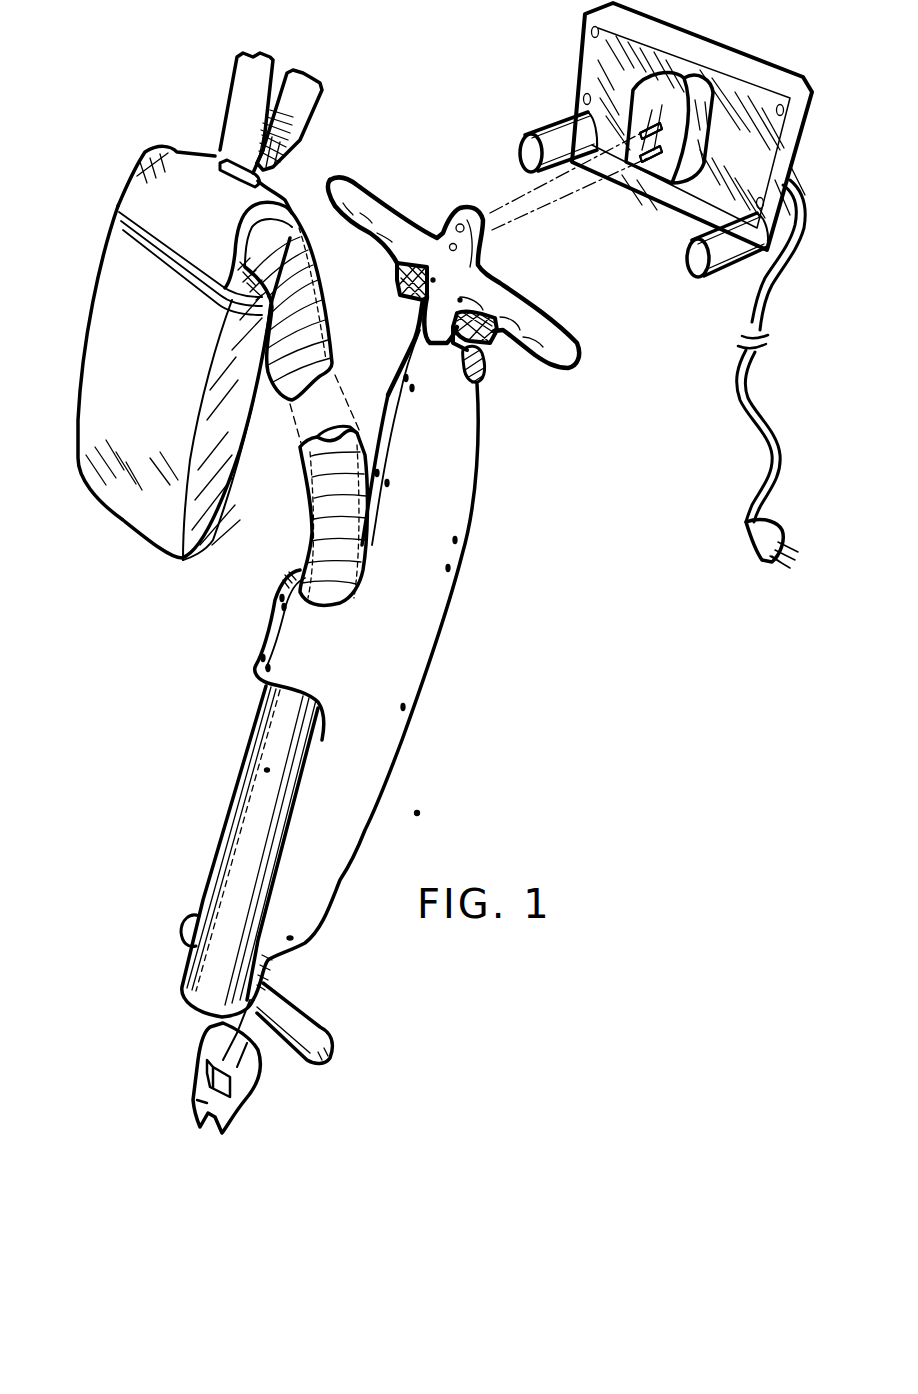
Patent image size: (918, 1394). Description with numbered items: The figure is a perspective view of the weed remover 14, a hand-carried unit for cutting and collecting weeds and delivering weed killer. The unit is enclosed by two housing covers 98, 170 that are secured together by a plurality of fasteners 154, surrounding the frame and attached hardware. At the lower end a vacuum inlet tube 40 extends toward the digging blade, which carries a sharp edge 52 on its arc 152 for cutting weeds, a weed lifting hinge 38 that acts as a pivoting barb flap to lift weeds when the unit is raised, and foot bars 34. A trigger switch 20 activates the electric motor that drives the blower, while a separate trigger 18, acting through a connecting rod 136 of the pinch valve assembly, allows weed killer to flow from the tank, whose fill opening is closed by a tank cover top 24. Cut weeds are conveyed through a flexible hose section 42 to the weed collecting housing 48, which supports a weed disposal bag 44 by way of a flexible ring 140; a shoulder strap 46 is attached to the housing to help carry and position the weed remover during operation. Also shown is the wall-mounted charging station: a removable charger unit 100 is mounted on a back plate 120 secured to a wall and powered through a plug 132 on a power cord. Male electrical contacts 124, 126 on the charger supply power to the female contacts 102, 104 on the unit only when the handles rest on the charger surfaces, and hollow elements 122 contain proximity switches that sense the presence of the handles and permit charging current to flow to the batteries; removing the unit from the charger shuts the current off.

The weed remover 14 is at (172, 682).
The trigger 18 is at (505, 345).
The trigger switch 20 is at (410, 290).
The tank cover top 24 is at (487, 370).
The foot bars 34 is at (190, 928).
The weed lifting hinge 38 is at (210, 1065).
The vacuum inlet tube 40 is at (268, 770).
The flexible hose 42 is at (318, 500).
The weed disposal bag 44 is at (108, 276).
The shoulder strap 46 is at (292, 107).
The weed collecting housing 48 is at (181, 163).
The sharp edge 52 is at (200, 1102).
The housing cover 98 is at (402, 405).
The removable charger unit 100 is at (683, 83).
The female electrical contact 102 is at (465, 228).
The female electrical contact 104 is at (457, 247).
The back plate 120 is at (670, 32).
The proximity switch housing elements 122 is at (530, 155).
The male electrical contact 124 is at (630, 95).
The male electrical contact 126 is at (633, 190).
The plug 132 is at (760, 552).
The connecting rod 136 is at (250, 1088).
The flexible ring 140 is at (118, 213).
The arc 152 is at (206, 1142).
The fasteners 154 is at (417, 705).
The housing cover 170 is at (432, 615).